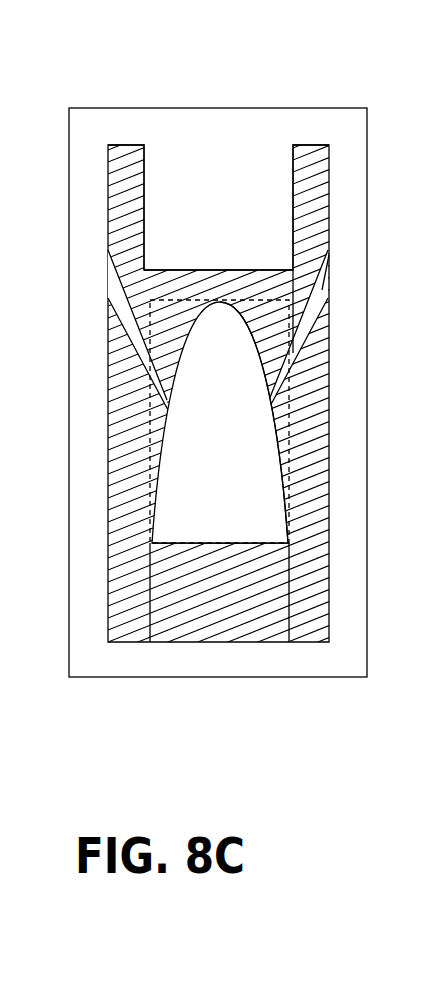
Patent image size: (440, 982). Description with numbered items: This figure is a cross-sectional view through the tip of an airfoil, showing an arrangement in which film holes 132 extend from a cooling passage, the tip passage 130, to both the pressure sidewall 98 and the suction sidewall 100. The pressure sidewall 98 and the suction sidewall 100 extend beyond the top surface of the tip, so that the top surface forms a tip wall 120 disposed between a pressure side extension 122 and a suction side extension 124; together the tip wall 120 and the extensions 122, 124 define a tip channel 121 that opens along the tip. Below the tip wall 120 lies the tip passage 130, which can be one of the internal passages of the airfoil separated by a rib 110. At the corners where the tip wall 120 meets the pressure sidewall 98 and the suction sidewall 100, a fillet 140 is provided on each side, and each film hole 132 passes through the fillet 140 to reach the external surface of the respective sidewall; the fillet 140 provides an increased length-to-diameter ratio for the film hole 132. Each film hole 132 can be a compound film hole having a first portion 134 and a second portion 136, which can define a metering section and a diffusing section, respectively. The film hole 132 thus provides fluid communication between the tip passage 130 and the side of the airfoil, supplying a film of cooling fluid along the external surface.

The pressure sidewall 98 is at (107, 463).
The suction sidewall 100 is at (330, 390).
The rib 110 is at (204, 606).
The tip wall 120 is at (195, 270).
The tip channel 121 is at (255, 150).
The pressure side extension 122 is at (313, 145).
The suction side extension 124 is at (107, 205).
The tip passage 130 is at (228, 496).
The film hole 132 is at (287, 328).
The first portion 134 is at (293, 353).
The second portion 136 is at (322, 290).
The fillet 140 is at (107, 378).